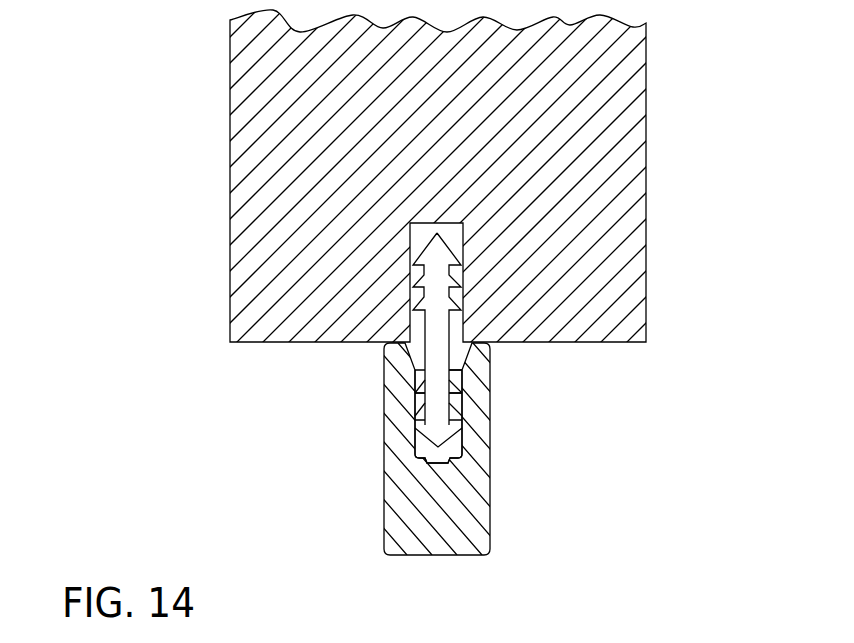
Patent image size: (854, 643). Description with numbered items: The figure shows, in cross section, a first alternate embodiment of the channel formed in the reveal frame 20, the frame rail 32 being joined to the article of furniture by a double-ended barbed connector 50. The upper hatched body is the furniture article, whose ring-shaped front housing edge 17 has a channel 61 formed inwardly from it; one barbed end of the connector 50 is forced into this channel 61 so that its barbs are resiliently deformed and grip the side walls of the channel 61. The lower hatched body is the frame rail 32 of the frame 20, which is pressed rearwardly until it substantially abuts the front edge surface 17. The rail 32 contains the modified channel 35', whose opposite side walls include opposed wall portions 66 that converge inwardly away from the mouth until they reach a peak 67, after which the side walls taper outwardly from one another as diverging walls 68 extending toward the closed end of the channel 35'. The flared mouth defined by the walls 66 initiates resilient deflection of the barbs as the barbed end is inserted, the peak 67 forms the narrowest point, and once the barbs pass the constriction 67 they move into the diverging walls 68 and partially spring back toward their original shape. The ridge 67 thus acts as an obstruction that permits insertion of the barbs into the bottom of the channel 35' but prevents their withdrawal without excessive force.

The front housing edge 17 is at (256, 333).
The reveal frame 20 is at (385, 553).
The upright frame rail 32 is at (468, 520).
The channel 35' is at (480, 416).
The barbed connector 50 is at (437, 415).
The channel 61 is at (455, 232).
The converging wall portions 66 is at (461, 354).
The peak 67 is at (466, 374).
The diverging walls 68 is at (420, 393).